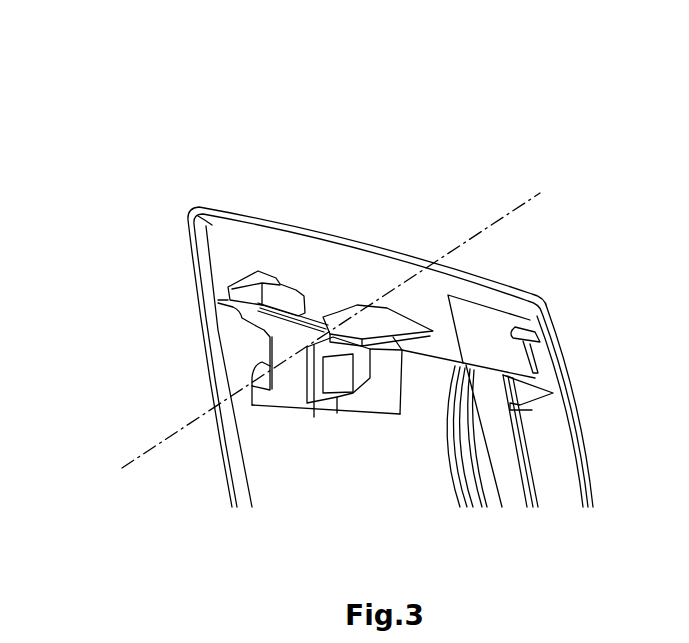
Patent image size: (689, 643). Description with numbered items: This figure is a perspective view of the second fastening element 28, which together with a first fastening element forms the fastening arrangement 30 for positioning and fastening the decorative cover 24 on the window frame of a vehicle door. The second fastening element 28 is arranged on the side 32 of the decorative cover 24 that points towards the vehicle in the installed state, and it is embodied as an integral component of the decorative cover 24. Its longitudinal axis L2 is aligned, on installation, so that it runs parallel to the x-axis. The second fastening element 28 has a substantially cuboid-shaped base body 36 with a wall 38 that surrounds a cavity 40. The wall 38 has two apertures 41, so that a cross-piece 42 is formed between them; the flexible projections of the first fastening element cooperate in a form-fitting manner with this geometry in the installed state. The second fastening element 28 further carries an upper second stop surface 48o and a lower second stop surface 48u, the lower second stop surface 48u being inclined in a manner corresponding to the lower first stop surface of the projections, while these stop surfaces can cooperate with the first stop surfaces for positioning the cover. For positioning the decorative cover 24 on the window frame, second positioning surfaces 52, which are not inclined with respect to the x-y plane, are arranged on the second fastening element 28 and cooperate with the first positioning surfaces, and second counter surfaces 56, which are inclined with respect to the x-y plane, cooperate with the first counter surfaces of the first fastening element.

The second fastening element 28 is at (318, 271).
The fastening arrangement 30 is at (108, 91).
The decorative cover 24 is at (366, 311).
The side of the decorative cover 32 is at (192, 209).
The base body 36 is at (391, 311).
The cavity 40 is at (333, 230).
The second counter surfaces 56 is at (253, 272).
The second positioning surfaces 52 is at (220, 318).
The apertures 41 is at (249, 348).
The cross-piece 42 is at (290, 383).
The upper second stop surface 48o is at (342, 356).
The lower second stop surface 48u is at (340, 422).
The wall 38 is at (355, 378).
The longitudinal axis L2 is at (331, 360).